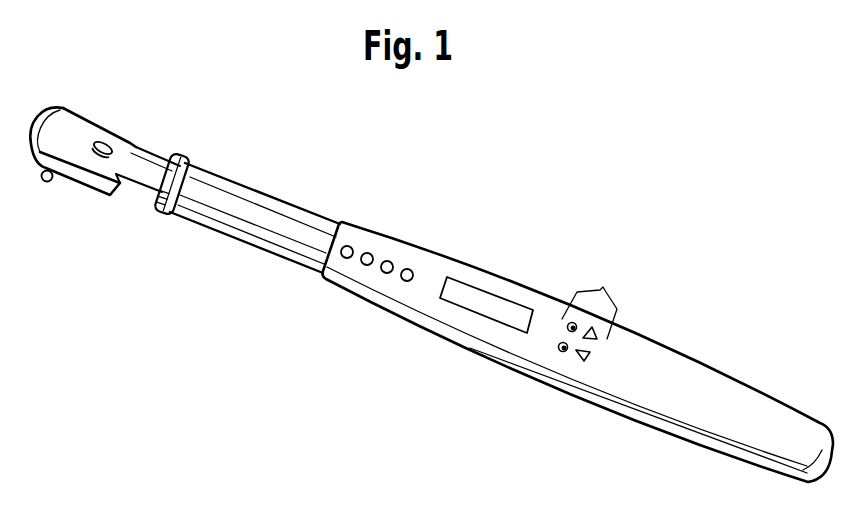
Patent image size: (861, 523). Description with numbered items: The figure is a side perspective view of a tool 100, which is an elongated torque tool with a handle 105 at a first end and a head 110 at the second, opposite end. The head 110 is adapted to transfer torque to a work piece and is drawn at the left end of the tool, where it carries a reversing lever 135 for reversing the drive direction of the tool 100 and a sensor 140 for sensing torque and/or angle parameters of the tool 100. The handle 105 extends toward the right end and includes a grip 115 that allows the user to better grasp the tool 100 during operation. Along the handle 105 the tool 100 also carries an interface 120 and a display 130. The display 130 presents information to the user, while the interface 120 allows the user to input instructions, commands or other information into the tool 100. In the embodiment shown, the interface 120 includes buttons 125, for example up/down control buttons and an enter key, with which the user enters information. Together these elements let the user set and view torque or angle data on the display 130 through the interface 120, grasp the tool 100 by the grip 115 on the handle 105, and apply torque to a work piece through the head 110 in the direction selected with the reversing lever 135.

The tool 100 is at (431, 257).
The handle 105 is at (820, 400).
The head 110 is at (86, 100).
The grip 115 is at (713, 385).
The interface 120 is at (603, 287).
The button 125 is at (598, 340).
The display 130 is at (482, 296).
The reversing lever 135 is at (113, 145).
The sensor 140 is at (49, 182).